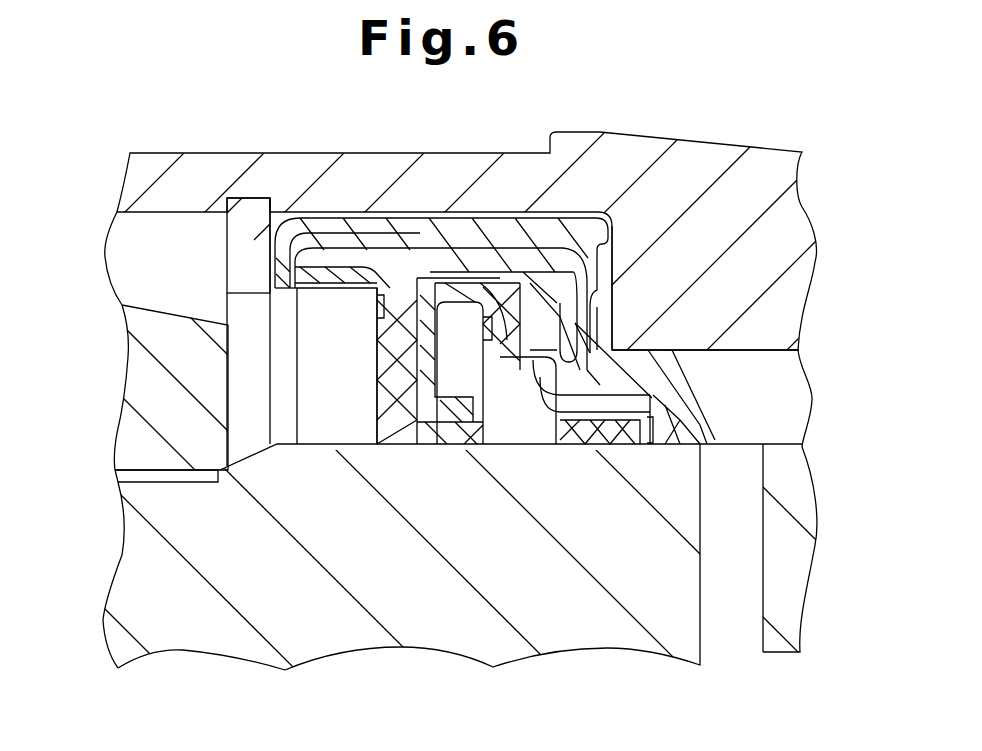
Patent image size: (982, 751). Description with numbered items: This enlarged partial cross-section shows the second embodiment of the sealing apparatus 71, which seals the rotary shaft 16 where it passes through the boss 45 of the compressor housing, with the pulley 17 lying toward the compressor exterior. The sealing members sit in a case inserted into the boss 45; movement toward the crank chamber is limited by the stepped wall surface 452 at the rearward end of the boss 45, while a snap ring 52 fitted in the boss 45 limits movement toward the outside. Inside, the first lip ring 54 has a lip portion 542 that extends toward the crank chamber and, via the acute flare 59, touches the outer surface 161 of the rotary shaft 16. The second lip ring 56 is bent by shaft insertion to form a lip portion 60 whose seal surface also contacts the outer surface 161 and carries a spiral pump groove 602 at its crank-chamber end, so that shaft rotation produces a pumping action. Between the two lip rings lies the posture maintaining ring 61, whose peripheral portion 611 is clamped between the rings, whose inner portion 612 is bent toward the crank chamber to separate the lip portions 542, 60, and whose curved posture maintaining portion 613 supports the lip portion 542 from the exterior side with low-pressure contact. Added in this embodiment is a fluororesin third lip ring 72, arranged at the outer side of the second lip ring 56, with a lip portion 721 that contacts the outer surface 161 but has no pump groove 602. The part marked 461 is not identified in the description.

The rotary shaft 16 is at (135, 585).
The outer surface of the rotary shaft 161 is at (352, 432).
The pulley 17 is at (135, 441).
The boss 45 is at (150, 170).
The stepped wall surface 452 is at (617, 242).
The housing wall 461 is at (763, 583).
The snap ring 52 is at (250, 212).
The first lip ring 54 is at (692, 350).
The lip portion 542 is at (683, 400).
The second lip ring 56 is at (470, 428).
The acute flare 59 is at (700, 446).
The lip portion 60 is at (513, 444).
The pump groove 602 is at (640, 455).
The posture maintaining ring 61 is at (650, 440).
The peripheral portion 611 is at (530, 350).
The inner portion 612 is at (620, 357).
The posture maintaining portion 613 is at (683, 397).
The sealing apparatus 71 is at (397, 199).
The third lip ring 72 is at (400, 387).
The lip portion 721 is at (438, 437).